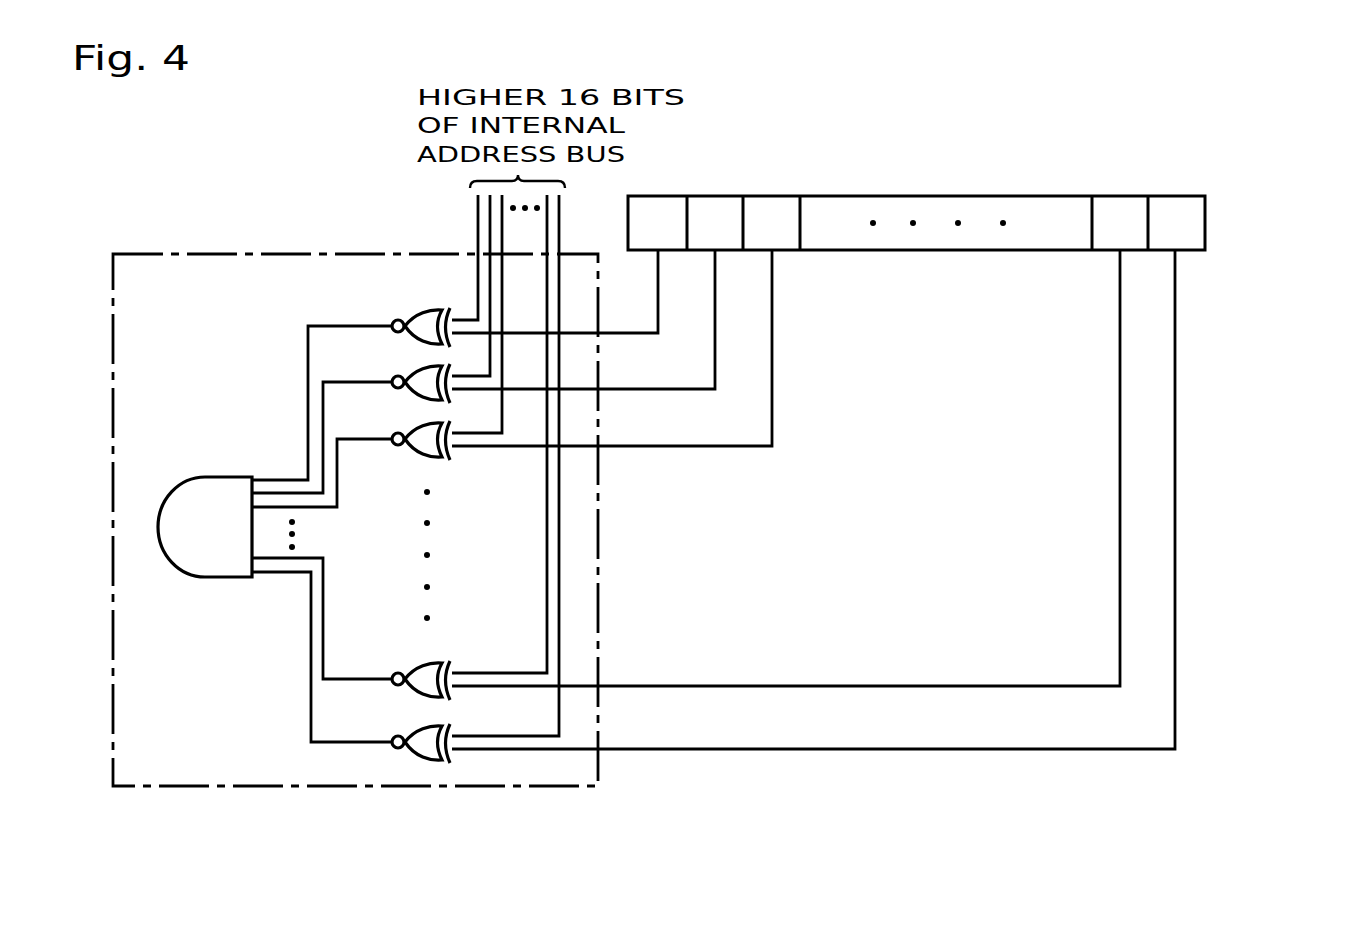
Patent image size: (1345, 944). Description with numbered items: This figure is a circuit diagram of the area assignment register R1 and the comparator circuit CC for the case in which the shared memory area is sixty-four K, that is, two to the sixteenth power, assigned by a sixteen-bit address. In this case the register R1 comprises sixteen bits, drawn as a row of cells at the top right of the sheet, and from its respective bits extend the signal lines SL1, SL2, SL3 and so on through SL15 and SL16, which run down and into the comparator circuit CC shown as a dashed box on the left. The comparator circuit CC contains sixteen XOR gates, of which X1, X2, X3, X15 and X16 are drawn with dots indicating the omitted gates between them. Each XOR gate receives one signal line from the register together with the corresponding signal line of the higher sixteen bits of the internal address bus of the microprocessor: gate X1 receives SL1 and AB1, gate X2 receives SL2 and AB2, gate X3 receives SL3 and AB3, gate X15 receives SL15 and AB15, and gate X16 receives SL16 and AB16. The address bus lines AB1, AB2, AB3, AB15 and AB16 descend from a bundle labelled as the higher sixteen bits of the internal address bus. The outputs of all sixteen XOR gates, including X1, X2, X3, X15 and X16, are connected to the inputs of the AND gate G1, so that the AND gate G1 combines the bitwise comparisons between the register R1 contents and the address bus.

The comparator circuit CC is at (562, 780).
The area assignment register R1 is at (1123, 200).
The AND gate G1 is at (238, 577).
The XOR gate X1 is at (425, 310).
The XOR gate X2 is at (425, 367).
The XOR gate X3 is at (425, 424).
The XOR gate X15 is at (422, 663).
The XOR gate X16 is at (420, 729).
The signal line SL1 is at (570, 291).
The signal line SL2 is at (599, 319).
The signal line SL3 is at (627, 348).
The signal line SL15 is at (802, 468).
The signal line SL16 is at (830, 499).
The signal line of the internal address bus AB1 is at (461, 297).
The signal line of the internal address bus AB2 is at (475, 354).
The signal line of the internal address bus AB3 is at (487, 409).
The signal line of the internal address bus AB15 is at (533, 642).
The signal line of the internal address bus AB16 is at (547, 710).